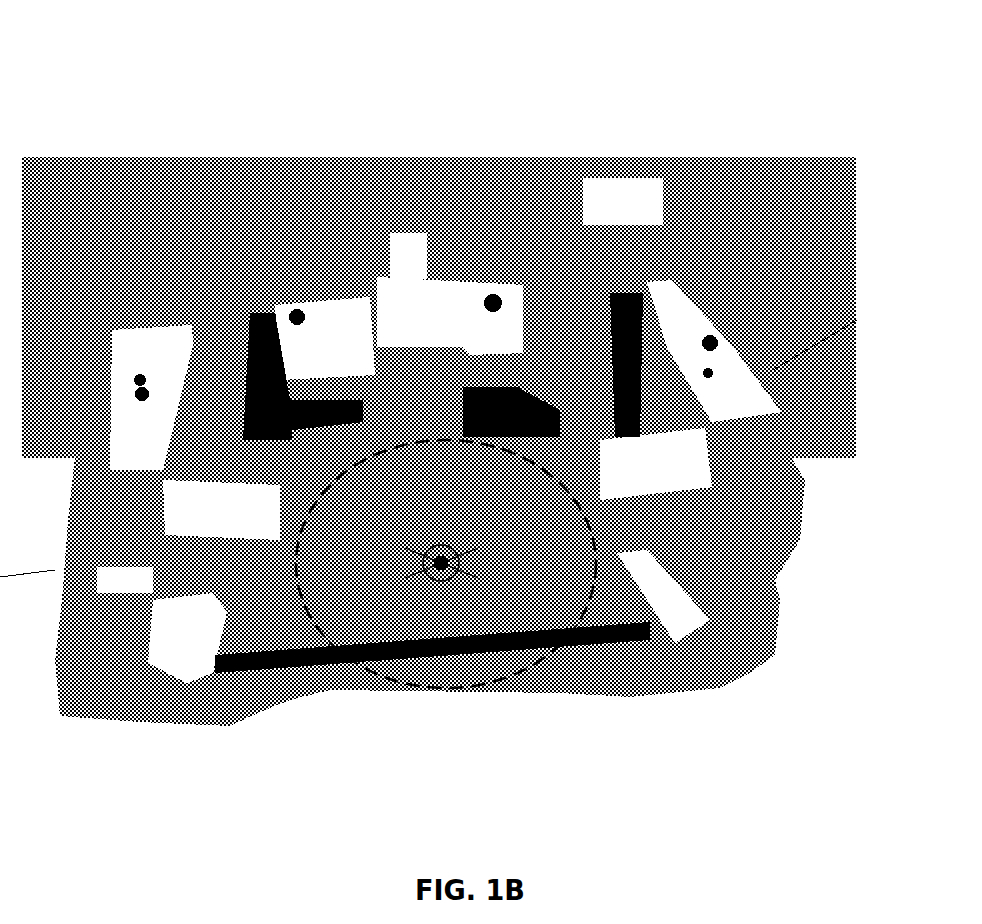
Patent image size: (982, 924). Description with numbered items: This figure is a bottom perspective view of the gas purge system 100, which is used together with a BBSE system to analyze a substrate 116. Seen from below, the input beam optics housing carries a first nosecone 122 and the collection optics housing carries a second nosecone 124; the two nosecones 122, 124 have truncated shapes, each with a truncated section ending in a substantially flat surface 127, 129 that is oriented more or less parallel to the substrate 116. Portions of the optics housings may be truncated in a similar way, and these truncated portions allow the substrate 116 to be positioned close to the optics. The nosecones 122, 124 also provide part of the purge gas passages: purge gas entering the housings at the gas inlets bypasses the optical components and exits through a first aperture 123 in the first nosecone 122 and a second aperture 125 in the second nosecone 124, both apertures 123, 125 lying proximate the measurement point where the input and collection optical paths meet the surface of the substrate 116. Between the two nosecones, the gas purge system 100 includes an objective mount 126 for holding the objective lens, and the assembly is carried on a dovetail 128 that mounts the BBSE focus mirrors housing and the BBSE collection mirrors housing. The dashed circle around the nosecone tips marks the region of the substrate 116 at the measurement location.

The gas purge system 100 is at (252, 143).
The substrate 116 is at (428, 690).
The first nosecone 122 is at (330, 655).
The first aperture 123 is at (410, 560).
The second nosecone 124 is at (517, 565).
The second aperture 125 is at (475, 558).
The objective mount 126 is at (527, 418).
The flat surface 127 is at (375, 573).
The dovetail 128 is at (690, 668).
The flat surface 129 is at (555, 600).